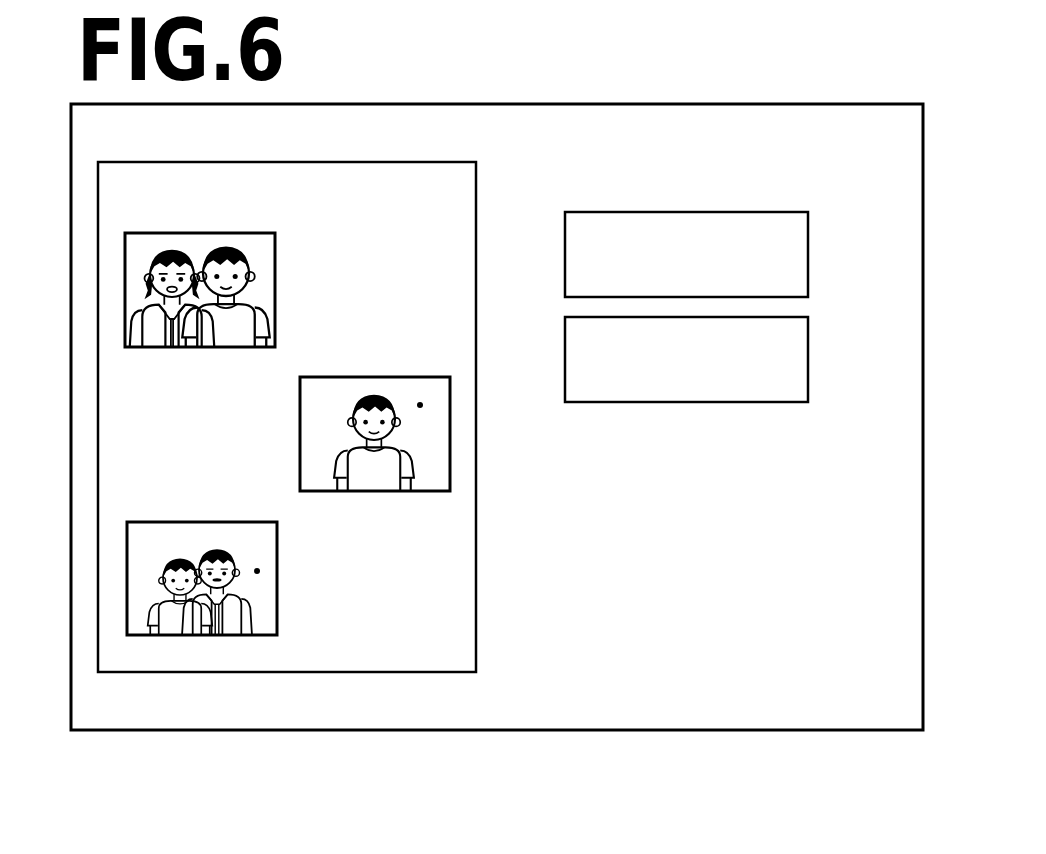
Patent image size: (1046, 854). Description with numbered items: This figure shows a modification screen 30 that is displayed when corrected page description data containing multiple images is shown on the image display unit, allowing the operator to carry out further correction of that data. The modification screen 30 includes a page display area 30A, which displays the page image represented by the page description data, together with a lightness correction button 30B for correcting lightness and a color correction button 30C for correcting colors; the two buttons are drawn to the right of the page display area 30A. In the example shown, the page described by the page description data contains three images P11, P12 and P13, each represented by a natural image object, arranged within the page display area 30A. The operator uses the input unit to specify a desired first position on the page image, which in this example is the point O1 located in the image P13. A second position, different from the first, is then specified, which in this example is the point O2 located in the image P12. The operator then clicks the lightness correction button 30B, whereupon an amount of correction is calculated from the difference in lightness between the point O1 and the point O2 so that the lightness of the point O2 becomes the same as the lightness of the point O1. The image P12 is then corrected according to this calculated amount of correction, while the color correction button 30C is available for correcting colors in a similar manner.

The modification screen 30 is at (842, 103).
The page display area 30A is at (437, 162).
The lightness correction button 30B is at (808, 232).
The color correction button 30C is at (808, 337).
The image P11 is at (276, 259).
The image P12 is at (300, 400).
The image P13 is at (277, 545).
The point O1 is at (257, 571).
The point O2 is at (420, 405).